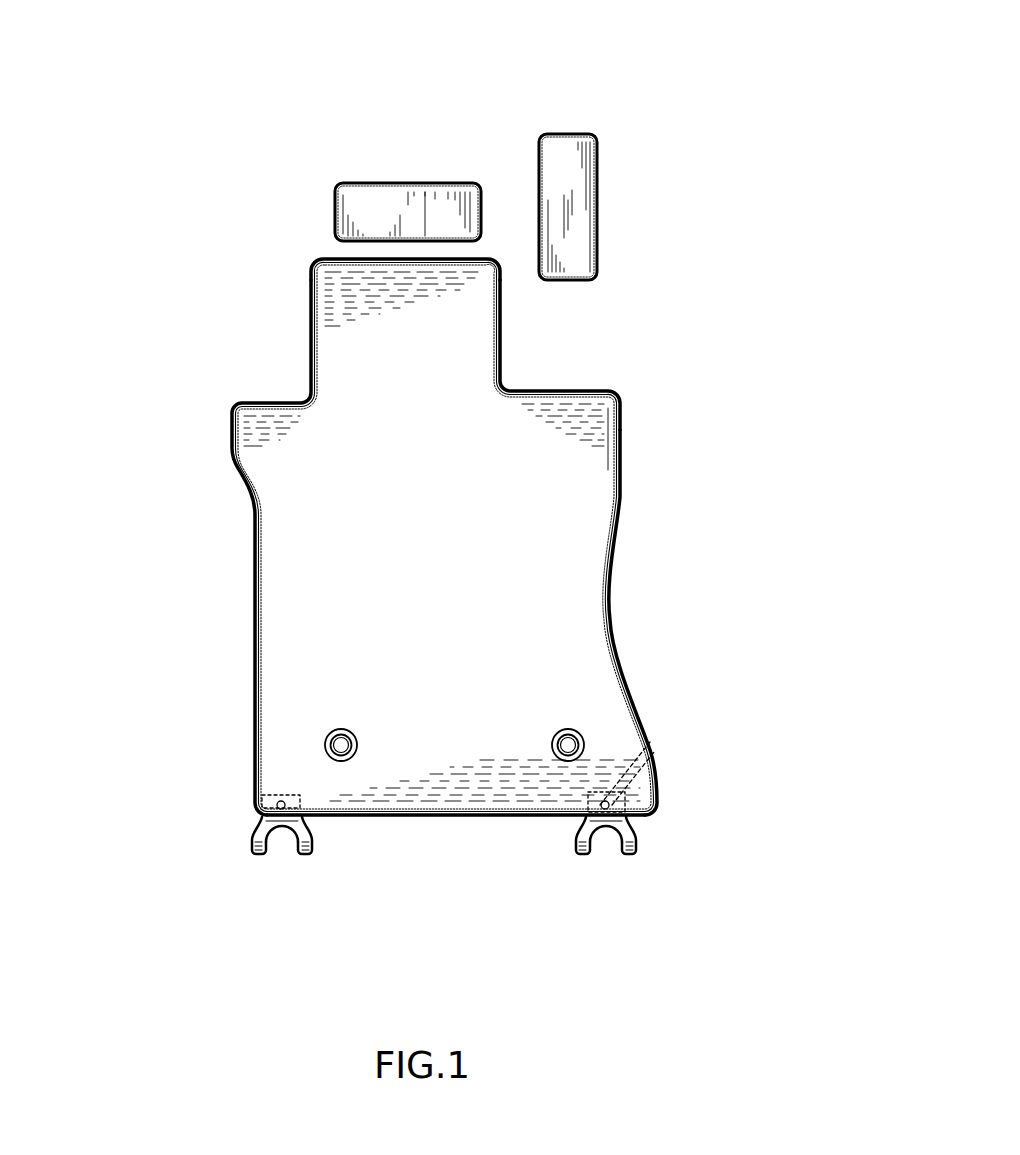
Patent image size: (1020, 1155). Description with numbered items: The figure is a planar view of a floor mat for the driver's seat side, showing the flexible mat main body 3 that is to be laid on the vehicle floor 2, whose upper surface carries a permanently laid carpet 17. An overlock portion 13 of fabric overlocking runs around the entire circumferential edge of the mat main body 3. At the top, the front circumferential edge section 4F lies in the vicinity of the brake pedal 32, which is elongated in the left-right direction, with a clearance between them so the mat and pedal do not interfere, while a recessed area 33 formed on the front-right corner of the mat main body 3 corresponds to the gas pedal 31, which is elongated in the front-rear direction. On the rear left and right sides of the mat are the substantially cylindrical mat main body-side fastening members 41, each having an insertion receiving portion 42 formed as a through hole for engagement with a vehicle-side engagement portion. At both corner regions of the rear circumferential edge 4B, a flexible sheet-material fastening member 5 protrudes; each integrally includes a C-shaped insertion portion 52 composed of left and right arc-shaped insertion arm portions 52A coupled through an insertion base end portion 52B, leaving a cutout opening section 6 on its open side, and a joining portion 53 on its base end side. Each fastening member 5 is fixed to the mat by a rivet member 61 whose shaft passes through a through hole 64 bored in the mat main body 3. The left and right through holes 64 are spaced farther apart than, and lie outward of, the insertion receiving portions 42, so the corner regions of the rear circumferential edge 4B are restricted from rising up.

The vehicle floor 2 is at (371, 536).
The carpet 17 is at (272, 368).
The mat main body 3 is at (623, 445).
The front circumferential edge section 4F is at (340, 259).
The rear circumferential edge 4B is at (365, 816).
The overlock portion 13 is at (250, 540).
The gas pedal 31 is at (575, 140).
The brake pedal 32 is at (401, 200).
The recessed area 33 is at (572, 390).
The mat main body-side fastening member 41 is at (221, 709).
The insertion receiving portion 42 is at (337, 741).
The fastening member 5 is at (453, 888).
The insertion portion 52 is at (629, 855).
The insertion arm portion 52A is at (574, 840).
The insertion base end portion 52B is at (604, 832).
The joining portion 53 is at (650, 742).
The cutout opening section 6 is at (280, 838).
The rivet member 61 is at (277, 806).
The through hole 64 is at (275, 797).